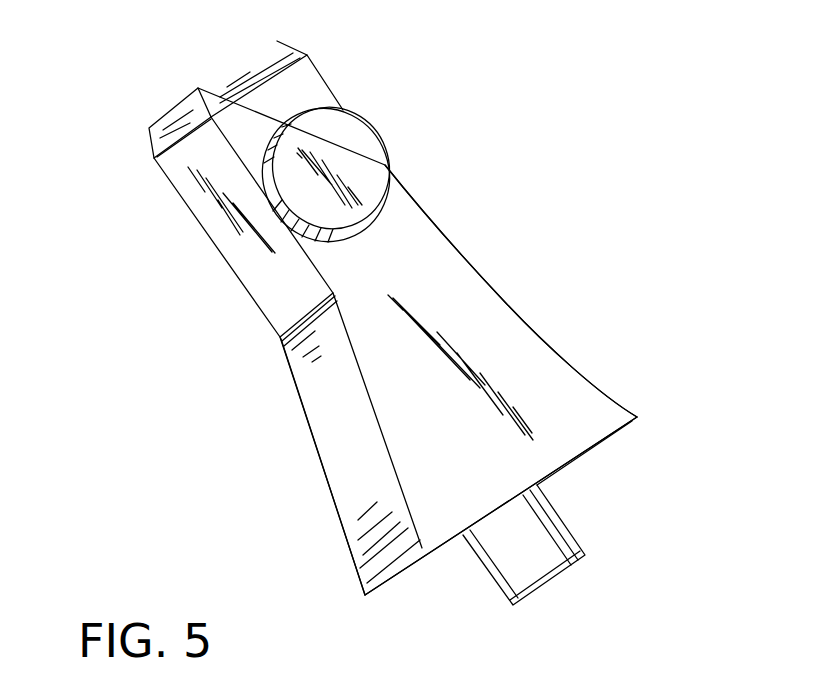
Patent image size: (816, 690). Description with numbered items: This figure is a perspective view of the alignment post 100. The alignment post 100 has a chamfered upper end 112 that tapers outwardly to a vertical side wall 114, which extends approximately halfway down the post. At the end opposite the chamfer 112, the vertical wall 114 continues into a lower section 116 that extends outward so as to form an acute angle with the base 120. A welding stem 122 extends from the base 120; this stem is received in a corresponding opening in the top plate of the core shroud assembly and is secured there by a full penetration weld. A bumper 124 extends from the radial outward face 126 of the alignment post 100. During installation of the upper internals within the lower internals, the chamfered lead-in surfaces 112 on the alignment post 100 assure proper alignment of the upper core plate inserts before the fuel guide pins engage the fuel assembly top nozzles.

The alignment post 100 is at (497, 205).
The chamfered upper end 112 is at (285, 50).
The vertical side wall 114 is at (225, 243).
The lower section 116 is at (325, 435).
The base 120 is at (447, 547).
The welding stem 122 is at (560, 537).
The bumper 124 is at (375, 160).
The radial outward face 126 is at (543, 342).